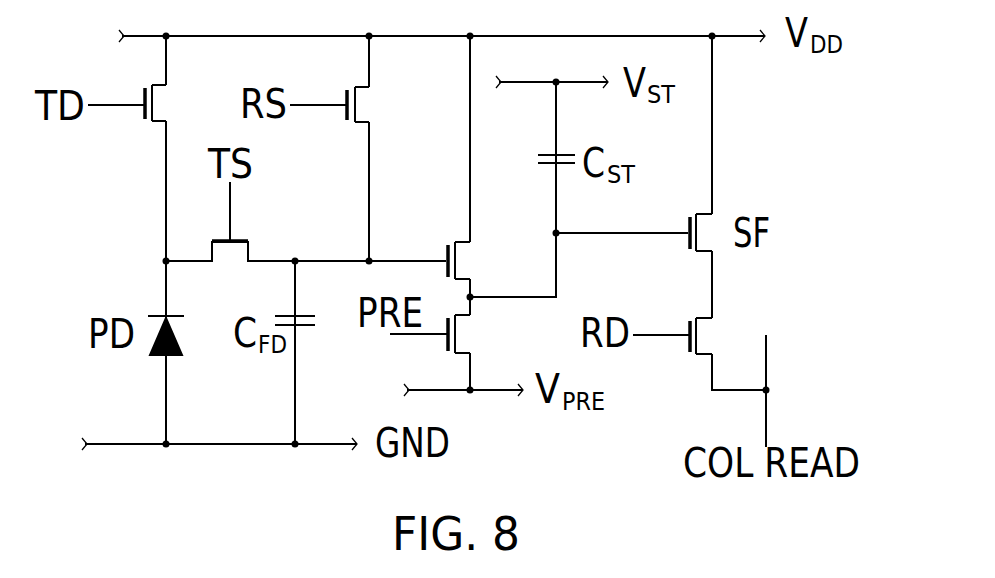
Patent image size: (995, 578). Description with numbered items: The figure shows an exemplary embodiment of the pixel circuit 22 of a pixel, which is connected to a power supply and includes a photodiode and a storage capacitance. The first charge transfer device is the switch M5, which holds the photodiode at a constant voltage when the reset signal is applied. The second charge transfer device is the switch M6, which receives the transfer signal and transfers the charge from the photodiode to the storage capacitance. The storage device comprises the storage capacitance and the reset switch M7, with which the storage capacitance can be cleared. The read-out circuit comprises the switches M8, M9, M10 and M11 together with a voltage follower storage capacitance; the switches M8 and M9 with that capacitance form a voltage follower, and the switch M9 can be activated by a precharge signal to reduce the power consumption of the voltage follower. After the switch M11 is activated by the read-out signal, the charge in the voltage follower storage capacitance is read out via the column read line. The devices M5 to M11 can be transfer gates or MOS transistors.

The pixel circuit 22 is at (132, 268).
The switch M5 is at (152, 124).
The switch M6 is at (250, 258).
The reset switch M7 is at (358, 104).
The switch M8 is at (455, 262).
The switch M9 is at (455, 333).
The switch M10 is at (708, 213).
The switch M11 is at (706, 316).